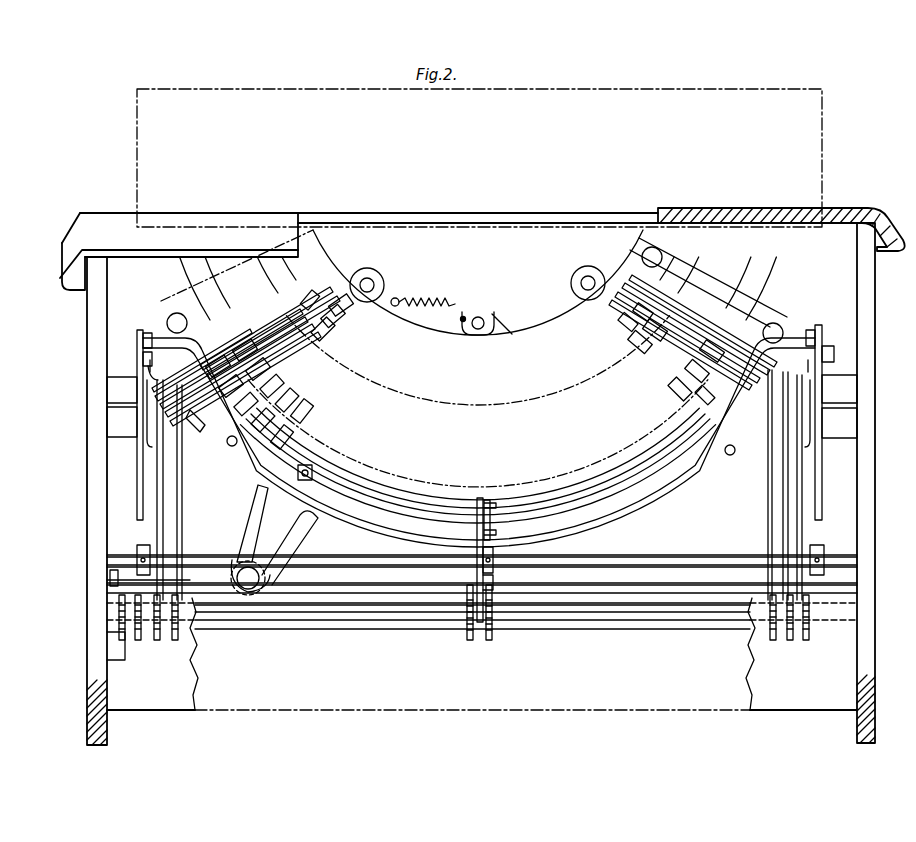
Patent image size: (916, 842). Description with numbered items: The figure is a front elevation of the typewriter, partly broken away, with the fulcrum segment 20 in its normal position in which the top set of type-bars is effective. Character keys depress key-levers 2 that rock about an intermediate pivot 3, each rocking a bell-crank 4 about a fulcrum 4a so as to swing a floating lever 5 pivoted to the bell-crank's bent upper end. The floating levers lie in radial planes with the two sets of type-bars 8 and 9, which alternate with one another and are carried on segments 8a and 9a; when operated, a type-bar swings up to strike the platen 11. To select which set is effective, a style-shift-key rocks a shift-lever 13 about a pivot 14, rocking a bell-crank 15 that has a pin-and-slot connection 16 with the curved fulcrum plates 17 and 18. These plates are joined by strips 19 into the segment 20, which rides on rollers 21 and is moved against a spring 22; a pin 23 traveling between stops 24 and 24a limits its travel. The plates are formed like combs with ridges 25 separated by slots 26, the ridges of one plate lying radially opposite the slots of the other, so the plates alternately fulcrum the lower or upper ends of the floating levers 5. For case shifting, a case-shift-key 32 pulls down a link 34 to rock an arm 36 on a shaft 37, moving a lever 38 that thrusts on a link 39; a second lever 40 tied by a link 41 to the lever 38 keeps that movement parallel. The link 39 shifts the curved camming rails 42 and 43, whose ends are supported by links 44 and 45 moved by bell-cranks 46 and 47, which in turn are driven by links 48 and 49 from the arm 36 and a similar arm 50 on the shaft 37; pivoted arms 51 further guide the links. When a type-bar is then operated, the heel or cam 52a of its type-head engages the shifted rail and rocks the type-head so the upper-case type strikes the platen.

The key-levers 2 is at (489, 642).
The intermediate pivot 3 is at (322, 600).
The bell-crank 4 is at (177, 482).
The fulcrum 4a is at (362, 612).
The floating lever 5 is at (680, 280).
The type-bars 8 is at (258, 347).
The segment 8a is at (296, 386).
The type-bars 9 is at (270, 313).
The segment 9a is at (308, 340).
The platen 11 is at (766, 90).
The shift-lever 13 is at (110, 580).
The pivot 14 is at (112, 637).
The bell-crank 15 is at (258, 532).
The pin-and-slot connection 16 is at (314, 470).
The fulcrum plate 17 is at (325, 455).
The fulcrum plate 18 is at (360, 386).
The strips 19 is at (214, 290).
The segment 20 is at (708, 271).
The rollers 21 is at (384, 284).
The spring 22 is at (425, 318).
The pin 23 is at (480, 317).
The stop 24 is at (505, 325).
The stop 24a is at (461, 316).
The teeth or ridges 25 is at (642, 346).
The slots 26 is at (625, 336).
The case-shift-key 32 is at (138, 642).
The link 34 is at (157, 642).
The arm 36 is at (143, 545).
The shaft 37 is at (683, 557).
The lever 38 is at (476, 500).
The link 39 is at (489, 501).
The second lever 40 is at (468, 622).
The link 41 is at (494, 588).
The camming rail 42 is at (390, 495).
The camming rail 43 is at (342, 514).
The link 44 is at (142, 334).
The link 45 is at (812, 331).
The bell-crank 46 is at (136, 360).
The bell-crank 47 is at (828, 356).
The link 48 is at (137, 490).
The link 49 is at (824, 480).
The arm 50 is at (817, 545).
The pivoted arms 51 is at (147, 440).
The heel or cam 52a is at (200, 432).